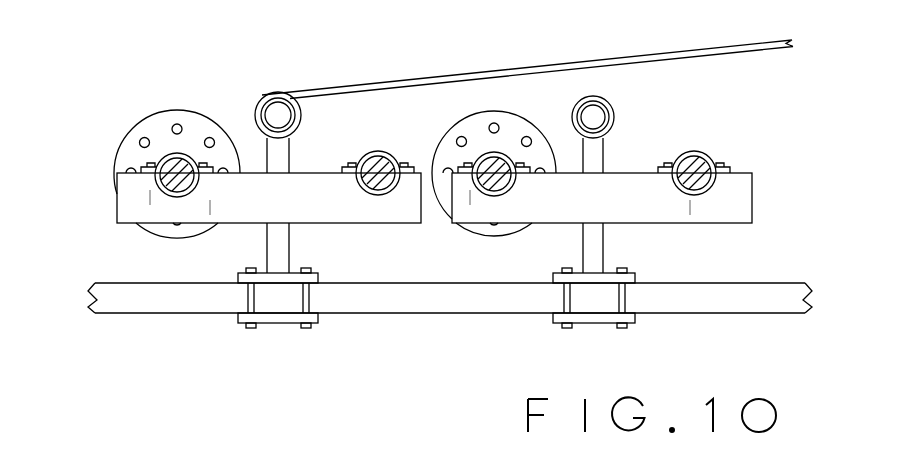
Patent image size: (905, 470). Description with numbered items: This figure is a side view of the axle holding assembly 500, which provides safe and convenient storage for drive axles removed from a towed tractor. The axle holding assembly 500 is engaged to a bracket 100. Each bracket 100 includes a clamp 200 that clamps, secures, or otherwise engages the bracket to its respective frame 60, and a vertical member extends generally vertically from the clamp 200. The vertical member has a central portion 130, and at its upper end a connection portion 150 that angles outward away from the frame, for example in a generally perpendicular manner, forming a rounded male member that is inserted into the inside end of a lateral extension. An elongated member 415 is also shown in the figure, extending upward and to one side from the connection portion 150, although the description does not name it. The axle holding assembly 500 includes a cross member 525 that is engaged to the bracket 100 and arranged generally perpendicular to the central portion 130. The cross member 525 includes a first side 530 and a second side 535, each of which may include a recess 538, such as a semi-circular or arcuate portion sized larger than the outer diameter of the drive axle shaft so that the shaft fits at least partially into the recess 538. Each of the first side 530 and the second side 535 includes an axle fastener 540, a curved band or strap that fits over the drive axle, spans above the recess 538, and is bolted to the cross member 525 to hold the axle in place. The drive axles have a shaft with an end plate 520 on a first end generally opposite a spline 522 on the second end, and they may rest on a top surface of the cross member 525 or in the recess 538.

The frame 60 is at (133, 300).
The bracket 100 is at (312, 231).
The central portion 130 is at (265, 253).
The connection portion 150 is at (300, 110).
The clamp 200 is at (270, 325).
The bar 415 is at (480, 72).
The axle holding assembly 500 is at (160, 85).
The end plate 520 is at (142, 124).
The spline 522 is at (158, 172).
The cross member 525 is at (235, 210).
The first side 530 is at (132, 192).
The second side 535 is at (420, 172).
The recess 538 is at (242, 172).
The axle fastener 540 is at (178, 157).